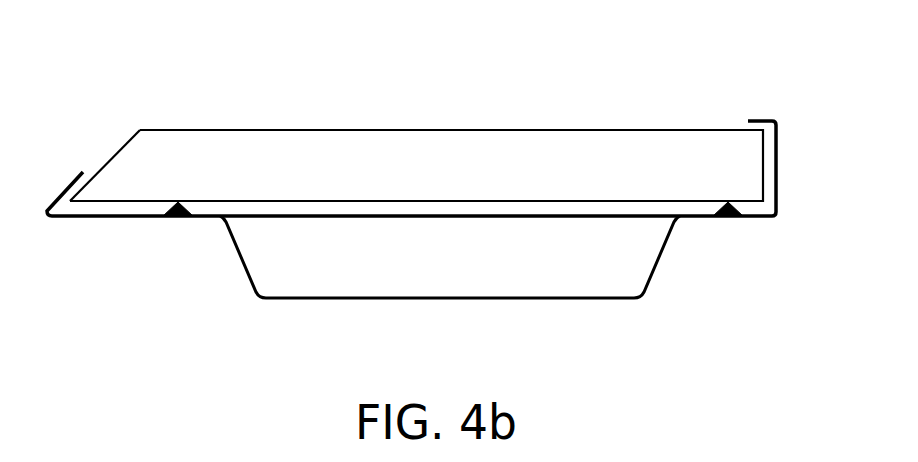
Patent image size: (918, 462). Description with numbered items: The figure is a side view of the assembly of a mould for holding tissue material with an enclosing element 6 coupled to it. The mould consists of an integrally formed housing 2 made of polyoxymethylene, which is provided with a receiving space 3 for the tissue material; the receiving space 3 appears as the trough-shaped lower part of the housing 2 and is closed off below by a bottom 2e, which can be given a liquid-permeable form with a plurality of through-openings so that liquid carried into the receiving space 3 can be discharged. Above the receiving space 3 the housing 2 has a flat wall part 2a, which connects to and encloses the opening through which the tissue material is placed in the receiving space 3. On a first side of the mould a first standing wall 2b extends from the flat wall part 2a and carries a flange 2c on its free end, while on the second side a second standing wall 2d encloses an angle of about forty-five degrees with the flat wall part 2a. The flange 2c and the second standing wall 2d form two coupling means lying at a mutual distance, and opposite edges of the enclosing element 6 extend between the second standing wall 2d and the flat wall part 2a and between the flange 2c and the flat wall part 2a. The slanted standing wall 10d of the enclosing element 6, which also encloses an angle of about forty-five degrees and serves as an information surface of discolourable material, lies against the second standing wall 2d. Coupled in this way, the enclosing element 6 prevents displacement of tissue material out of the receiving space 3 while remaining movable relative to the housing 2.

The housing 2 is at (663, 258).
The flat wall part 2a is at (120, 218).
The first standing wall 2b is at (777, 168).
The flange 2c is at (762, 118).
The second standing wall 2d is at (66, 190).
The bottom 2e is at (453, 301).
The receiving space 3 is at (459, 270).
The enclosing element 6 is at (450, 167).
The standing wall 10d is at (113, 153).